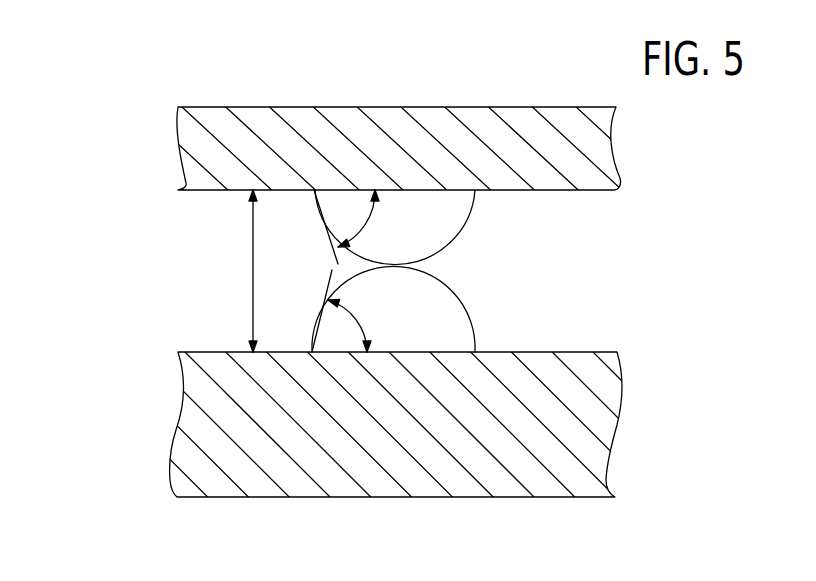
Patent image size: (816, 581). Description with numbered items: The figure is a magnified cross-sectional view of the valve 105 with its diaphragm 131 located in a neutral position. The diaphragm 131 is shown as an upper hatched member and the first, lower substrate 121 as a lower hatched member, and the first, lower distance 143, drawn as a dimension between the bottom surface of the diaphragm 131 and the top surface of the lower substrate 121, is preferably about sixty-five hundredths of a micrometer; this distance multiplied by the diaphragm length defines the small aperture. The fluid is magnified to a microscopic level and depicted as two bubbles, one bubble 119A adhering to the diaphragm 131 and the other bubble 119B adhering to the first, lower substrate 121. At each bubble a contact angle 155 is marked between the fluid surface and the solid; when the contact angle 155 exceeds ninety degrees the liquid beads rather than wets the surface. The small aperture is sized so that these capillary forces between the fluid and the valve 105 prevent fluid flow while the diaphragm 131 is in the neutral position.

The valve 105 is at (145, 75).
The diaphragm 131 is at (177, 154).
The first, lower substrate 121 is at (176, 426).
The first, lower distance 143 is at (253, 277).
The bubble 119A is at (467, 226).
The bubble 119B is at (473, 330).
The contact angle 155 is at (368, 220).